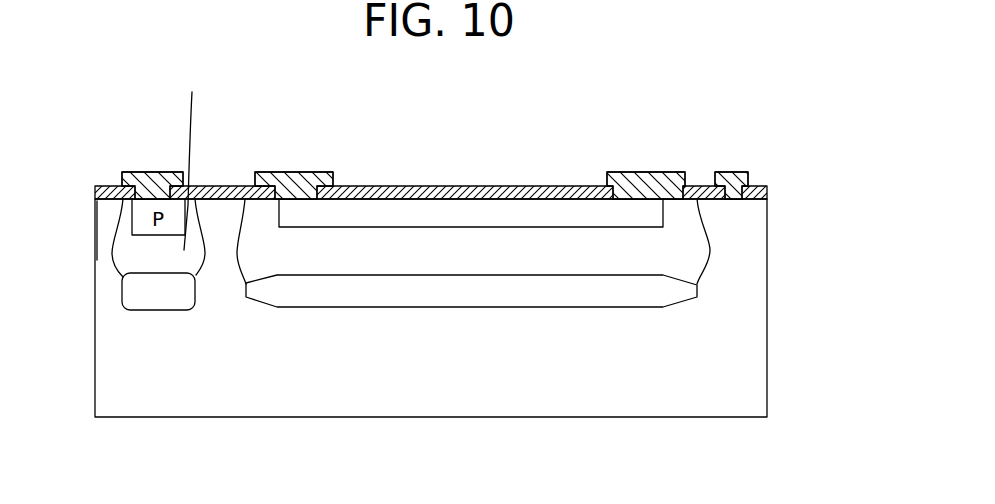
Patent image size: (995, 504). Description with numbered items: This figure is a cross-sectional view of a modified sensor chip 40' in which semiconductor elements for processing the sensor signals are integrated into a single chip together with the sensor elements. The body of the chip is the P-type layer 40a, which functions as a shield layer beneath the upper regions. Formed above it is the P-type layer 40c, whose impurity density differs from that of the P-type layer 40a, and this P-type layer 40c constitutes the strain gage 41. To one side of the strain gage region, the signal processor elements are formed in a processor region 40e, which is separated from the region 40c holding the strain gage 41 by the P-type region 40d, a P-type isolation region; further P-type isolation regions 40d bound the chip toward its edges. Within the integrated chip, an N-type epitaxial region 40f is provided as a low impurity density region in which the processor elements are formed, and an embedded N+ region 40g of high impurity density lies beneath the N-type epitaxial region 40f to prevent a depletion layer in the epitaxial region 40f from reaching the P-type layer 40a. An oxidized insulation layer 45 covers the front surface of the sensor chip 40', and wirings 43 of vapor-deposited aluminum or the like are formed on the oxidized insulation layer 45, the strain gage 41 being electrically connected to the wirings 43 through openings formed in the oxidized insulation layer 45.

The sensor chip 40' is at (485, 308).
The P-type layer 40a is at (773, 310).
The P-type layer 40c is at (513, 213).
The P-type isolation region 40d is at (740, 265).
The processor region 40e is at (106, 220).
The N-type epitaxial region 40f is at (113, 254).
The embedded N+ region 40g is at (122, 298).
The strain gage 41 is at (471, 167).
The wirings 43 is at (150, 183).
The oxidized insulation layer 45 is at (768, 193).